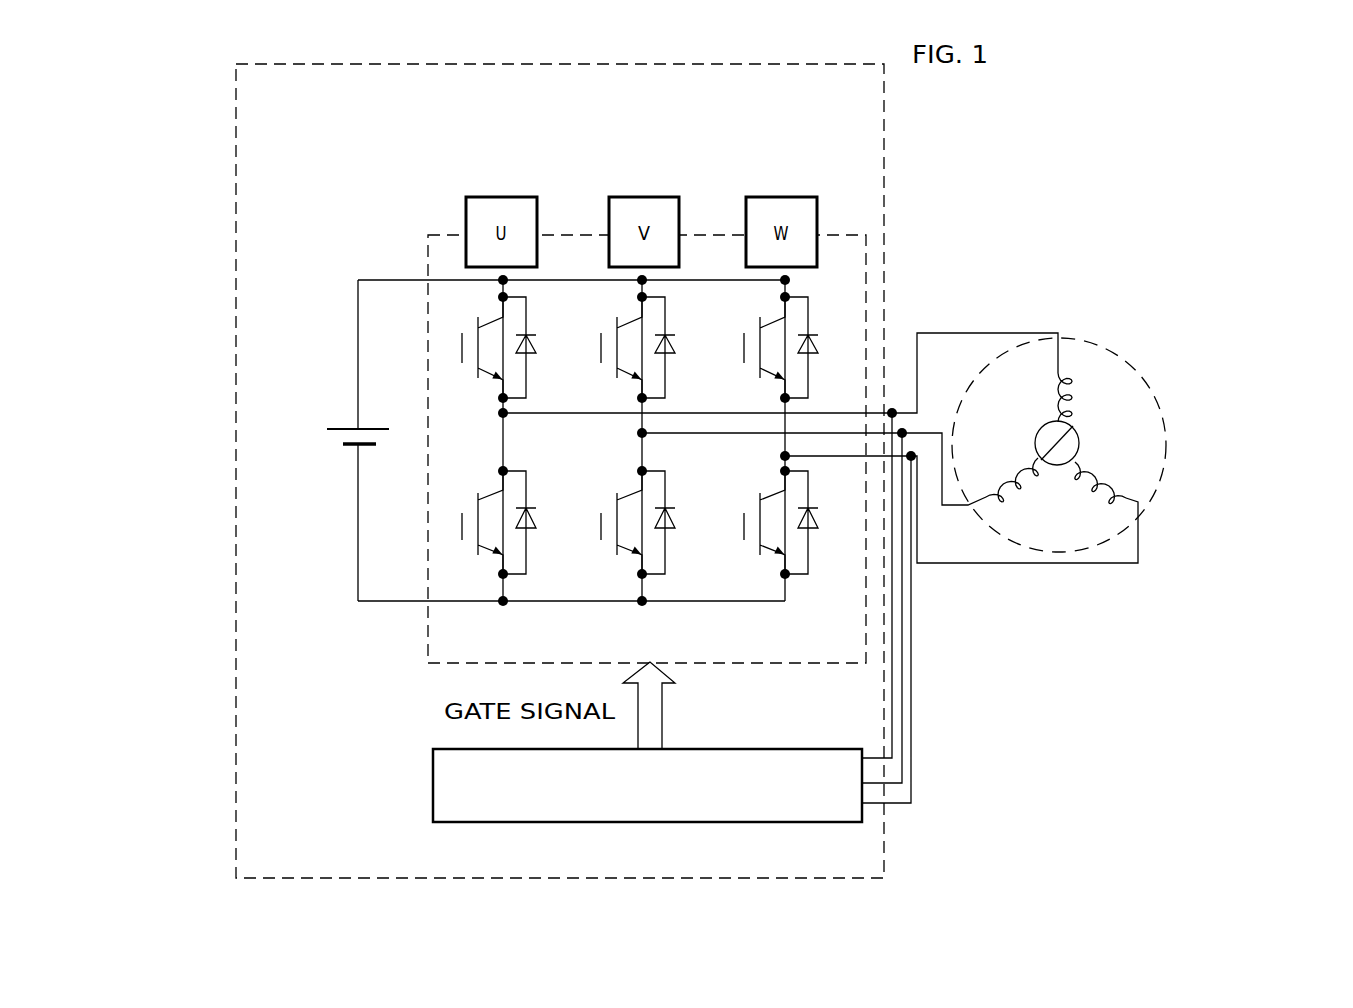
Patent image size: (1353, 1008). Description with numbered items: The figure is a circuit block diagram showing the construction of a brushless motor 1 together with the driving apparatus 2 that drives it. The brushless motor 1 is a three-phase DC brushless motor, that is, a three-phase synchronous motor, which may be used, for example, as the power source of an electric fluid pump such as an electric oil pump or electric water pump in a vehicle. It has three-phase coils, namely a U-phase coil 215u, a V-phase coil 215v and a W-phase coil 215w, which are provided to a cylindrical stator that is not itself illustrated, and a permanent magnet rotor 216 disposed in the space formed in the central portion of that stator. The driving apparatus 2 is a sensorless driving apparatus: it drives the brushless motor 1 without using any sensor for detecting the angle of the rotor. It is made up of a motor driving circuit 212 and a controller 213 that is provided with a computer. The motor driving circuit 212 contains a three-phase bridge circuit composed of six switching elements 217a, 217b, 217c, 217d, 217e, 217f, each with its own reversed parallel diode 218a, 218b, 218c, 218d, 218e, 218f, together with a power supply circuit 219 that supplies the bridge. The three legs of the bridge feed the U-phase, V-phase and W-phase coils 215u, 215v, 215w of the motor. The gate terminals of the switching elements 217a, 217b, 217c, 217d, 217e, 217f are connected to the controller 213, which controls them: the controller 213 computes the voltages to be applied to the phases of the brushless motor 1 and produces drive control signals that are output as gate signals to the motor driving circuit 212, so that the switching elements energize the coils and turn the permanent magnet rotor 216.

The brushless motor 1 is at (1131, 319).
The driving apparatus 2 is at (236, 213).
The motor driving circuit 212 is at (428, 268).
The controller 213 is at (433, 783).
The U-phase coil 215u is at (1075, 403).
The V-phase coil 215v is at (1003, 493).
The W-phase coil 215w is at (1092, 505).
The permanent magnet rotor 216 is at (1057, 465).
The switching element 217a is at (470, 333).
The switching element 217b is at (470, 513).
The switching element 217c is at (603, 333).
The switching element 217d is at (602, 542).
The switching element 217e is at (745, 333).
The switching element 217f is at (745, 542).
The reversed parallel diode 218a is at (536, 346).
The reversed parallel diode 218b is at (528, 508).
The reversed parallel diode 218c is at (672, 346).
The reversed parallel diode 218d is at (672, 525).
The reversed parallel diode 218e is at (812, 335).
The reversed parallel diode 218f is at (830, 523).
The power supply circuit 219 is at (343, 437).